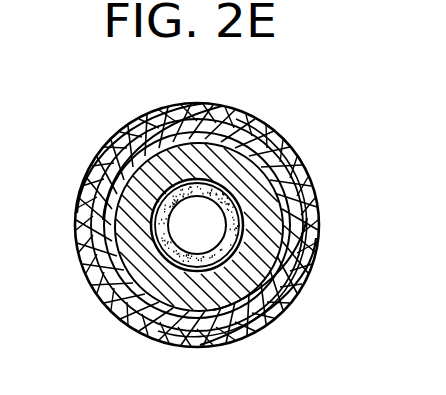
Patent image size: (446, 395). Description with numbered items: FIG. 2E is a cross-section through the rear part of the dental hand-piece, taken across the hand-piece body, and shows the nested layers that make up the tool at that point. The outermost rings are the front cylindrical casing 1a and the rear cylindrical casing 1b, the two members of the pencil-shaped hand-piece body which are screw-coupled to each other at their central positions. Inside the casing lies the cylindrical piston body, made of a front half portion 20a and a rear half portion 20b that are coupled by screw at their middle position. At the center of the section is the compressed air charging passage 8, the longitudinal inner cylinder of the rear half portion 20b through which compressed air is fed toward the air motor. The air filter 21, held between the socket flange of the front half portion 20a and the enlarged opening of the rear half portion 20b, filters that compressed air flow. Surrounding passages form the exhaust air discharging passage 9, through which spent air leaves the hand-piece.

The compressed air charging passage 8 is at (207, 236).
The exhaust air discharging passage 9 is at (160, 118).
The front cylindrical casing 1a is at (247, 122).
The rear cylindrical casing 1b is at (283, 142).
The front half portion of the piston body 20a is at (300, 155).
The rear half portion of the piston body 20b is at (132, 325).
The air filter 21 is at (96, 283).